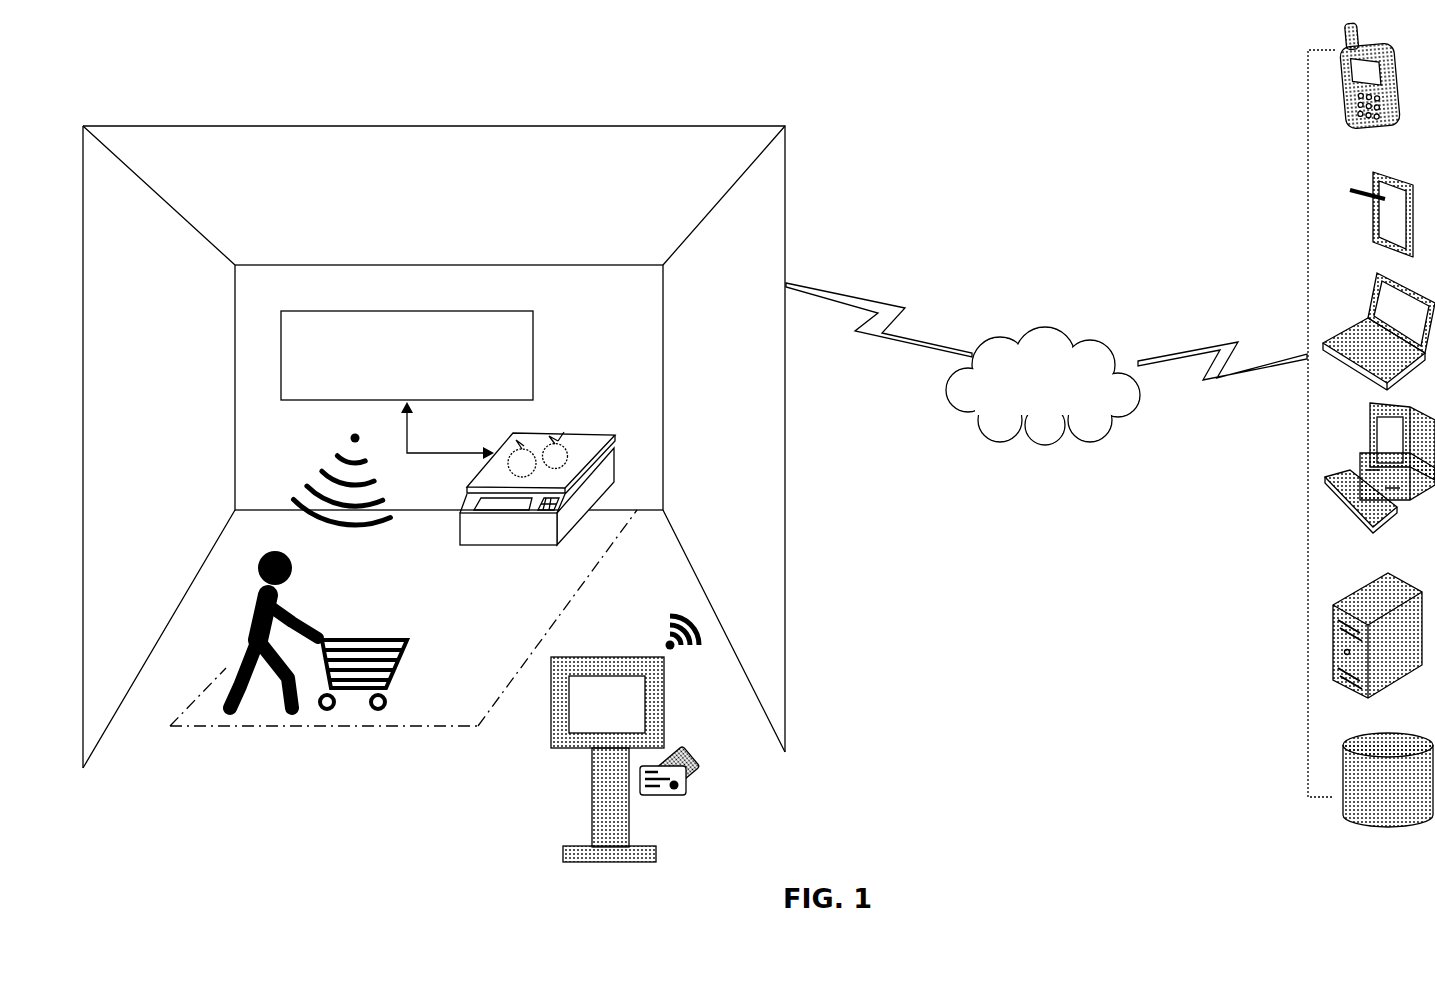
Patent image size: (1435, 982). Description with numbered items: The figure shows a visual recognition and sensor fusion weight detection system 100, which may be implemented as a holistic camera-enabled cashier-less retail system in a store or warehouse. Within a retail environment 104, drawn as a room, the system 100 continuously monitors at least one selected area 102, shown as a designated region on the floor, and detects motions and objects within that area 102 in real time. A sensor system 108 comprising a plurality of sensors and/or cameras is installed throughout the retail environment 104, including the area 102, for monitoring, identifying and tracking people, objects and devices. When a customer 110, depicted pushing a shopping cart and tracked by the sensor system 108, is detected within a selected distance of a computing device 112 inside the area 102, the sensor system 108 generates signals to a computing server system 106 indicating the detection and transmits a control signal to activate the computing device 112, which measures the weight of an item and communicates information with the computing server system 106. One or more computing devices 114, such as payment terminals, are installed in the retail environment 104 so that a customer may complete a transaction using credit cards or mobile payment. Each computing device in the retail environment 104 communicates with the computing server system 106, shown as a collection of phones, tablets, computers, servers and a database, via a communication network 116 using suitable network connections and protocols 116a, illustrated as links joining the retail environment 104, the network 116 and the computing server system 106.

The visual recognition and sensor fusion weight detection system 100 is at (340, 58).
The selected area 102 is at (405, 727).
The retail environment 104 is at (786, 157).
The computing server system 106 is at (1307, 546).
The sensor system 108 is at (407, 418).
The customer 110 is at (291, 614).
The computing device 112 is at (580, 448).
The computing devices 114 is at (665, 681).
The communication network 116 is at (1043, 386).
The network connections and protocols 116a is at (1046, 350).